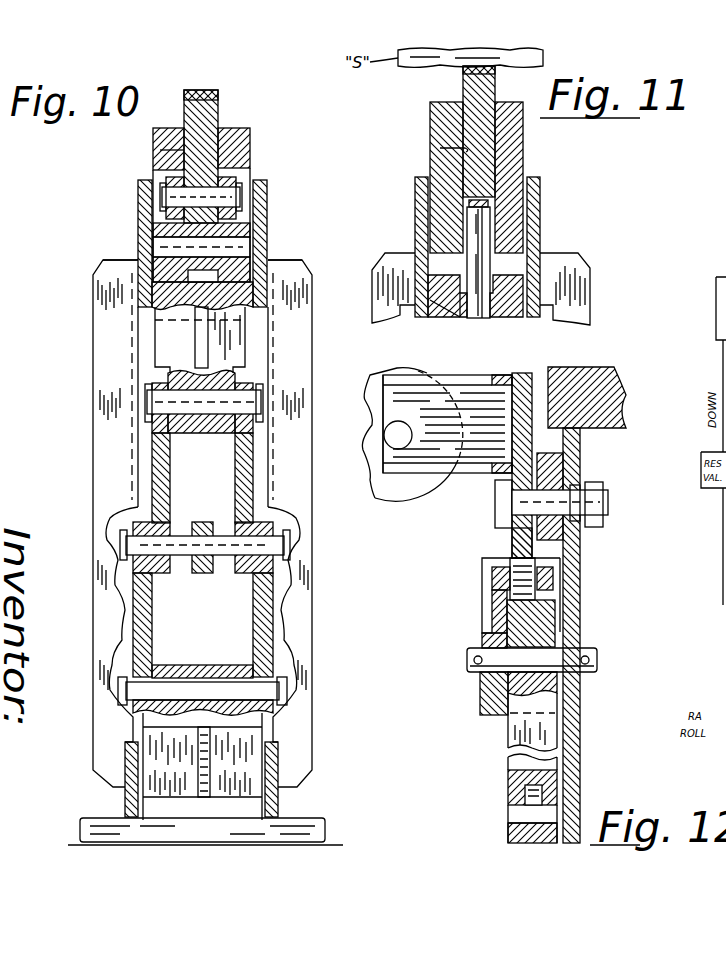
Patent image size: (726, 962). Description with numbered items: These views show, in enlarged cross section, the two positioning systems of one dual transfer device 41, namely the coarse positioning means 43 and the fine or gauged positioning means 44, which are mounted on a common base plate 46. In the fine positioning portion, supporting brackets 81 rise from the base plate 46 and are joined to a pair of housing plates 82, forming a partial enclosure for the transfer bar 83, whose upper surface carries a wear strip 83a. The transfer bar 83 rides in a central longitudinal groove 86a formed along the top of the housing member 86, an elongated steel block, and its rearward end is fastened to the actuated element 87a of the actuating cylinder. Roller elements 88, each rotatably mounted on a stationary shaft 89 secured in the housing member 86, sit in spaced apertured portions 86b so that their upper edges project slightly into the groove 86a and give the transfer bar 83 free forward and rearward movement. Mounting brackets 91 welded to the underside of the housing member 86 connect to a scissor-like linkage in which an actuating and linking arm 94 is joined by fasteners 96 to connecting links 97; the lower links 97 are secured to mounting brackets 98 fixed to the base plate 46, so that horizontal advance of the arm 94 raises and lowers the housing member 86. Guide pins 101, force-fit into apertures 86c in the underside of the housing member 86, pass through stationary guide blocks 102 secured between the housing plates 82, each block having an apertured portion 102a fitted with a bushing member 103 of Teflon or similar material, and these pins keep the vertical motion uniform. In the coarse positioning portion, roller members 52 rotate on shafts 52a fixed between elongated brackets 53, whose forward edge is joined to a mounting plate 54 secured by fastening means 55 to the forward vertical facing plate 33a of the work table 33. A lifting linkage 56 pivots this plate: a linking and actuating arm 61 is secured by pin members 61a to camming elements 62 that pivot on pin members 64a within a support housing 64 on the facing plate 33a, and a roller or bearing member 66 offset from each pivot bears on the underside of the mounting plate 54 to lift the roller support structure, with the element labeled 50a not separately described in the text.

In FIG. 12, the work table 33 is at (610, 390).
In FIG. 12, the forward vertical facing plate 33a is at (582, 592).
In FIG. 10, the dual transfer device 41 is at (78, 524).
In FIG. 12, the coarse positioning means 43 is at (446, 498).
In FIG. 10, the fine or gauged positioning means 44 is at (72, 359).
In FIG. 11, the fine or gauged positioning means 44 is at (610, 254).
In FIG. 10, the base plate 46 is at (312, 812).
In FIG. 12, the arm portion 50a is at (516, 532).
In FIG. 12, the roller members 52 is at (397, 489).
In FIG. 12, the shaft 52a is at (396, 440).
In FIG. 12, the elongated brackets 53 is at (452, 431).
In FIG. 12, the mounting plate 54 is at (522, 373).
In FIG. 12, the fastening means 55 is at (600, 490).
In FIG. 12, the lifting linkage 56 is at (470, 710).
In FIG. 12, the linking and actuating arm 61 is at (516, 846).
In FIG. 12, the pin members 61a is at (516, 812).
In FIG. 12, the camming elements 62 is at (515, 764).
In FIG. 12, the support housing 64 is at (480, 692).
In FIG. 12, the pin members 64a is at (590, 652).
In FIG. 12, the roller or bearing member 66 is at (492, 608).
In FIG. 10, the supporting brackets 81 is at (100, 406).
In FIG. 11, the supporting brackets 81 is at (580, 296).
In FIG. 10, the housing plates 82 is at (140, 200).
In FIG. 11, the housing plates 82 is at (414, 190).
In FIG. 10, the transfer bar 83 is at (218, 108).
In FIG. 11, the transfer bar 83 is at (495, 100).
In FIG. 10, the wear strip 83a is at (201, 91).
In FIG. 11, the wear strip 83a is at (462, 68).
In FIG. 10, the housing member 86 is at (250, 140).
In FIG. 11, the housing member 86 is at (446, 128).
In FIG. 10, the central longitudinal groove 86a is at (180, 152).
In FIG. 11, the central longitudinal groove 86a is at (440, 148).
In FIG. 10, the apertured or slotted portions 86b is at (214, 280).
In FIG. 11, the apertures 86c is at (486, 217).
In FIG. 10, the actuated element 87a is at (176, 180).
In FIG. 10, the roller elements 88 is at (152, 262).
In FIG. 10, the stationary shaft 89 is at (243, 243).
In FIG. 10, the mounting brackets 91 is at (180, 337).
In FIG. 10, the actuating and linking arm 94 is at (203, 574).
In FIG. 10, the fasteners 96 is at (292, 547).
In FIG. 10, the connecting links 97 is at (157, 470).
In FIG. 10, the mounting brackets 98 is at (238, 773).
In FIG. 11, the guide pins 101 is at (484, 234).
In FIG. 11, the stationary guide blocks 102 is at (515, 320).
In FIG. 11, the apertured portion 102a is at (452, 319).
In FIG. 11, the bushing member 103 is at (470, 322).